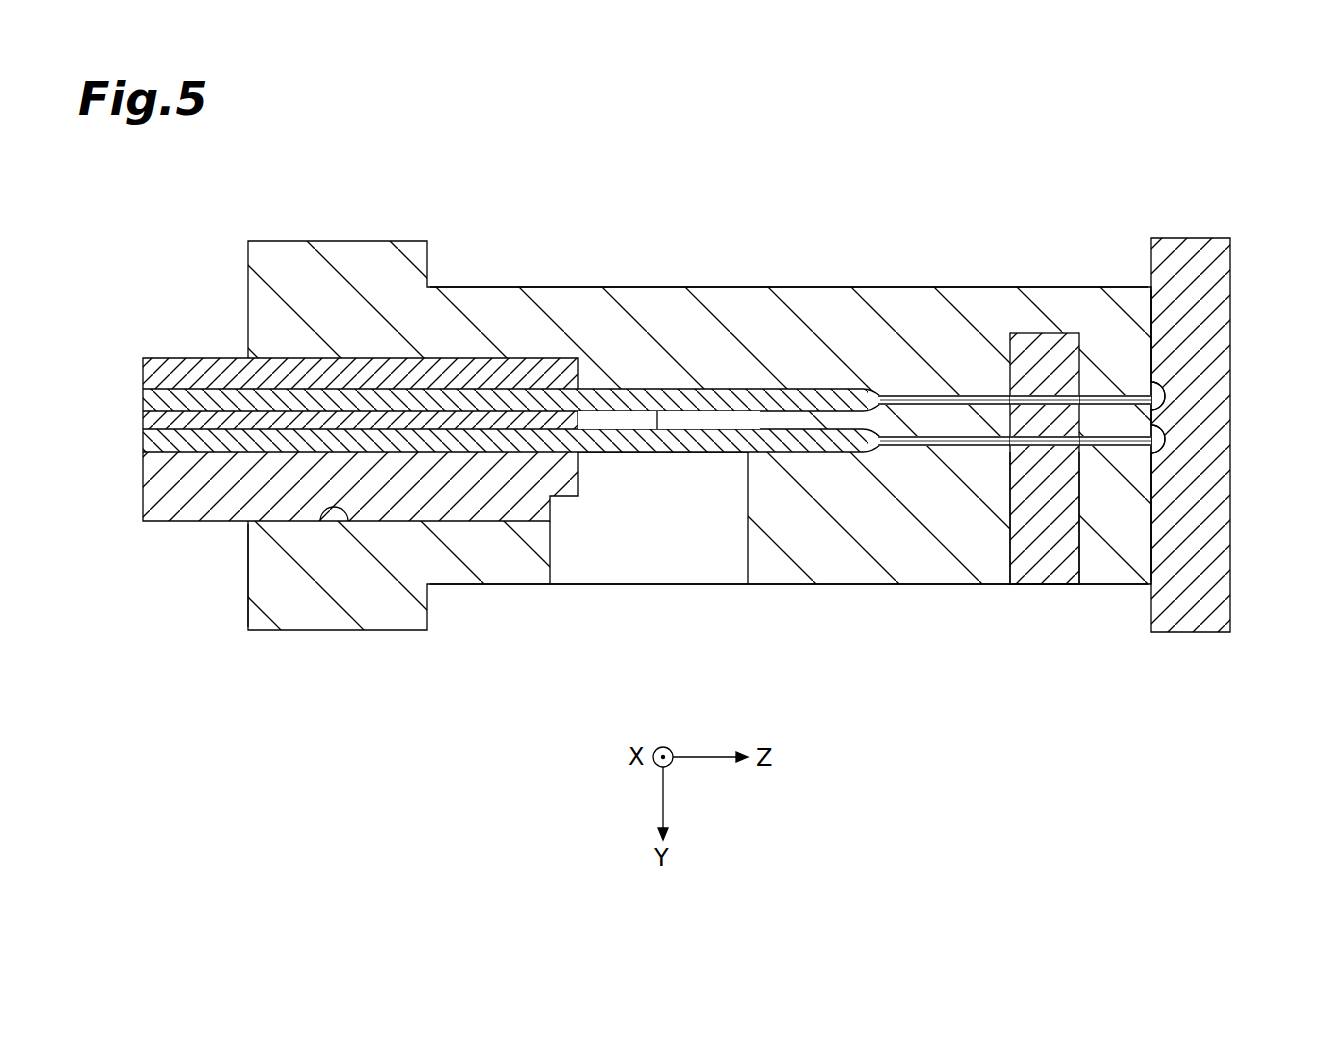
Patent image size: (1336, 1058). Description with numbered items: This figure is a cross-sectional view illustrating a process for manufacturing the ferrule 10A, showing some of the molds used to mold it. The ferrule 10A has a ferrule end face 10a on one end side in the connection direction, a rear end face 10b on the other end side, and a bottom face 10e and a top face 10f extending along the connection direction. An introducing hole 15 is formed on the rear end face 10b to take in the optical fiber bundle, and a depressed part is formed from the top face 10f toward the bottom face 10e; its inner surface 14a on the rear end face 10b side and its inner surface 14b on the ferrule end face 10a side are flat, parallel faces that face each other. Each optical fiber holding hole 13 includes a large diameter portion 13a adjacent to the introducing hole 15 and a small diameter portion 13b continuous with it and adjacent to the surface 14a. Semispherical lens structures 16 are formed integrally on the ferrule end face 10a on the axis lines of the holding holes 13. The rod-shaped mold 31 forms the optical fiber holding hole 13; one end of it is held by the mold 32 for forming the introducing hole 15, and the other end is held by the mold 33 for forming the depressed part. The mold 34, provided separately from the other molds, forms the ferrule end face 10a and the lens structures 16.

The ferrule 10A is at (1070, 287).
The ferrule end face 10a is at (1156, 310).
The rear end face 10b is at (248, 580).
The bottom face 10e is at (600, 286).
The top face 10f is at (517, 586).
The optical fiber holding hole 13 is at (864, 426).
The large diameter portion 13a is at (818, 400).
The small diameter portion 13b is at (950, 398).
The surface 14a is at (1022, 555).
The surface 14b is at (1065, 542).
The introducing hole 15 is at (317, 524).
The lens structure 16 is at (1163, 398).
The mold 31 is at (864, 426).
The mold 32 is at (500, 375).
The mold 33 is at (1040, 566).
The mold 34 is at (1232, 521).